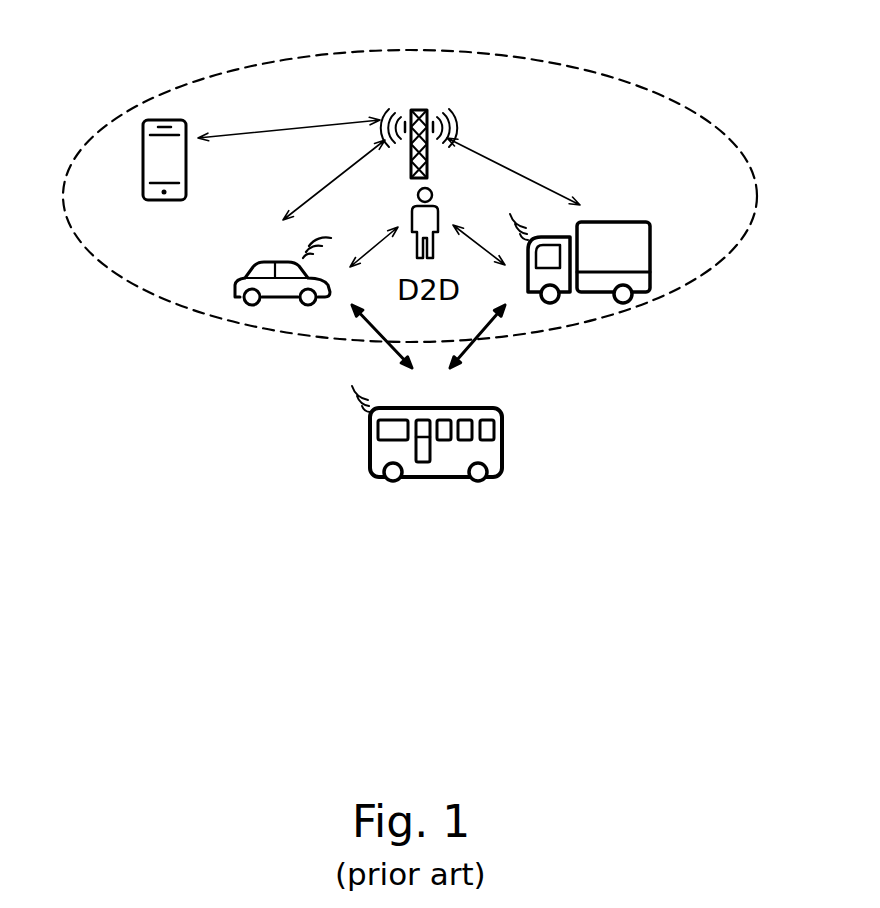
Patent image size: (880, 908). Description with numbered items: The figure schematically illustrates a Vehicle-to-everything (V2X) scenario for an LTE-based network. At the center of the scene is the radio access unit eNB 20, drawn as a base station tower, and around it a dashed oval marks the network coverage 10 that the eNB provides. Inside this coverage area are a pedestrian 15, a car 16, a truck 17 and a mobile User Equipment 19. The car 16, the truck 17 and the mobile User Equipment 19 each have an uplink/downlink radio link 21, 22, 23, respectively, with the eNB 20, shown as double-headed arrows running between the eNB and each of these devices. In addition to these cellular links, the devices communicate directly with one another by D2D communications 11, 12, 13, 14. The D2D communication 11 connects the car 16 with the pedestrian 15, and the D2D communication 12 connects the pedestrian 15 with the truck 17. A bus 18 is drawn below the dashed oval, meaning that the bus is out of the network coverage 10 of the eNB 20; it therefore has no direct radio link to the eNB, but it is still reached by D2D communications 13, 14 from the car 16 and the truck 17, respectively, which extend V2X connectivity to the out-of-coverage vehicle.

The network coverage 10 is at (683, 100).
The D2D communication 11 is at (368, 242).
The D2D communication 12 is at (488, 238).
The D2D communication 13 is at (385, 345).
The D2D communication 14 is at (473, 350).
The pedestrian 15 is at (428, 210).
The car 16 is at (268, 302).
The truck 17 is at (650, 270).
The bus 18 is at (440, 477).
The mobile User Equipment 19 is at (155, 120).
The radio access unit eNB 20 is at (418, 112).
The uplink/downlink radio link 21 is at (305, 200).
The uplink/downlink radio link 22 is at (490, 143).
The uplink/downlink radio link 23 is at (337, 122).